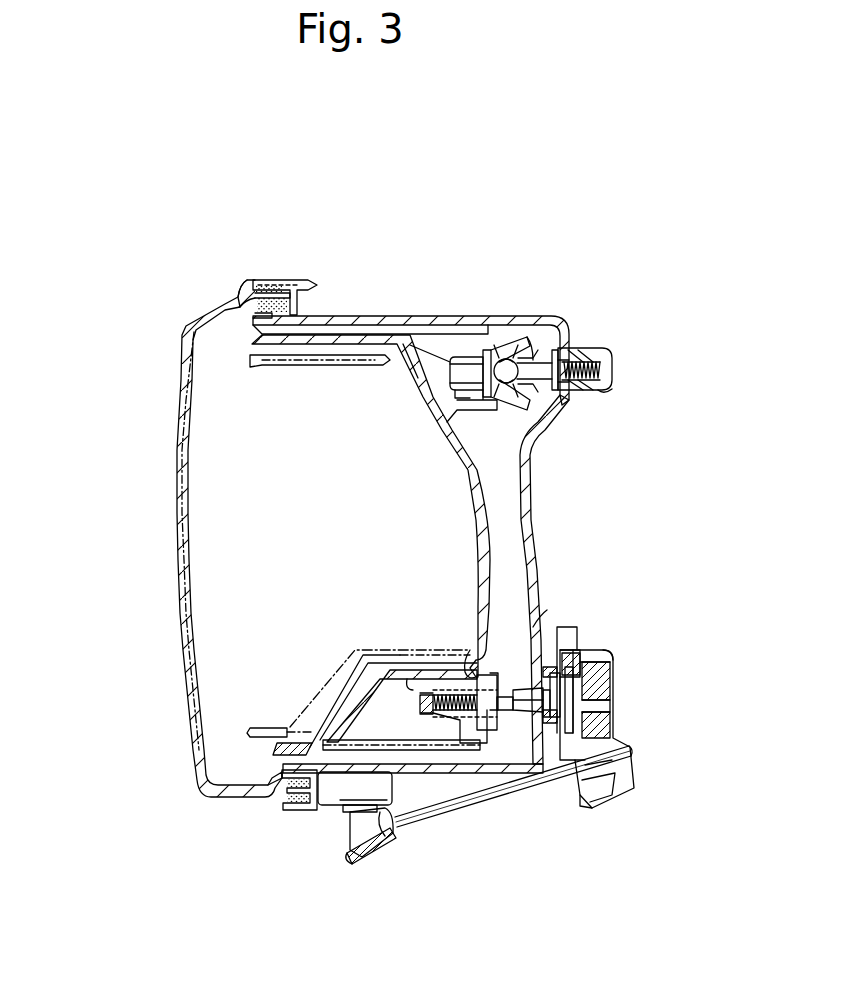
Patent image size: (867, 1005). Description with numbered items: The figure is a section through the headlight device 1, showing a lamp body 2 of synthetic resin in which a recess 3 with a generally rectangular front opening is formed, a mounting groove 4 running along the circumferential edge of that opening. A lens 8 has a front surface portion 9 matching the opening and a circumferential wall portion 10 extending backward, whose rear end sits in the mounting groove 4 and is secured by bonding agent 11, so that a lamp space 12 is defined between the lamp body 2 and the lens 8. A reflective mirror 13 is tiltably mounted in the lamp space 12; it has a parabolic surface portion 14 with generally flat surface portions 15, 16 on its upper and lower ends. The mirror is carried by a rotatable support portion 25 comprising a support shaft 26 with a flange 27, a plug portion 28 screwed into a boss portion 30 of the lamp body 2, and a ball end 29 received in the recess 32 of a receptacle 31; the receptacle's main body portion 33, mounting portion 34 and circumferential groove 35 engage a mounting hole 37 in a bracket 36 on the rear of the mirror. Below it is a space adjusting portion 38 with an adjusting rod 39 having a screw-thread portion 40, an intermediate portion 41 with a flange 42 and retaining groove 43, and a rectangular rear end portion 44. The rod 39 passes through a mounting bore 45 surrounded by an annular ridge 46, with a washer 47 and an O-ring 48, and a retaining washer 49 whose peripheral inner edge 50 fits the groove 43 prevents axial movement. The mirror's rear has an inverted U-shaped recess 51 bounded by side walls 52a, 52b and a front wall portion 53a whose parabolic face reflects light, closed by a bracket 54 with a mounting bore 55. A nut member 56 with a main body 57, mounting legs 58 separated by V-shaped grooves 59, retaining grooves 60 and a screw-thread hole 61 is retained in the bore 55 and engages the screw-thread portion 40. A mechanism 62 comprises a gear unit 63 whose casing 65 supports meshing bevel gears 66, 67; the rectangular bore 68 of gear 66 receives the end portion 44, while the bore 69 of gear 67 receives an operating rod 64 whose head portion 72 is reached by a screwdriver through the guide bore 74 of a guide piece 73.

The vehicle headlamp 1 is at (120, 200).
The lamp body 2 is at (337, 300).
The recess 3 is at (523, 490).
The mounting groove 4 is at (277, 292).
The lens 8 is at (177, 512).
The front surface portion 9 is at (177, 446).
The circumferential wall portion 10 is at (218, 303).
The bonding agent 11 is at (235, 300).
The lamp space 12 is at (283, 530).
The reflective mirror 13 is at (410, 381).
The parabolic surface portion 14 is at (420, 388).
The flat surface portion 15 is at (260, 366).
The flat surface portion 16 is at (250, 733).
The rotatable support portion 25 is at (553, 340).
The support shaft 26 is at (547, 338).
The flange 27 is at (572, 342).
The plug portion 28 is at (592, 345).
The ball end 29 is at (497, 345).
The boss portion 30 is at (612, 389).
The receptacle 31 is at (405, 437).
The recess 32 is at (518, 345).
The main body portion 33 is at (500, 432).
The mounting portion 34 is at (460, 393).
The circumferential groove 35 is at (480, 345).
The bracket 36 is at (425, 335).
The mounting hole 37 is at (458, 340).
The space adjusting portion 38 is at (543, 547).
The adjusting rod 39 is at (570, 652).
The screw-thread portion 40 is at (490, 665).
The intermediate portion 41 is at (548, 645).
The flange 42 is at (593, 800).
The retaining groove 43 is at (550, 720).
The rear end portion 44 is at (603, 695).
The mounting bore 45 is at (600, 656).
The annular ridge 46 is at (580, 765).
The washer 47 is at (613, 656).
The O-ring 48 is at (562, 740).
The retaining washer 49 is at (590, 652).
The peripheral inner edge 50 is at (540, 722).
The recess 51 is at (340, 737).
The side wall 52a is at (365, 660).
The side wall 52b is at (408, 672).
The front wall portion 53a is at (312, 740).
The bracket 54 is at (433, 690).
The mounting bore 55 is at (410, 668).
The nut member 56 is at (495, 718).
The main body 57 is at (509, 790).
The mounting legs 58 is at (453, 745).
The V-shaped grooves 59 is at (430, 764).
The retaining grooves 60 is at (460, 683).
The screw-thread hole 61 is at (467, 676).
The mechanism 62 is at (653, 781).
The gear unit 63 is at (618, 723).
The operating rod 64 is at (440, 745).
The casing 65 is at (622, 735).
The bevel gear 66 is at (615, 683).
The bevel gear 67 is at (625, 800).
The rectangular bore 68 is at (607, 712).
The bore 69 is at (634, 752).
The head portion 72 is at (402, 835).
The guide piece 73 is at (376, 858).
The guide bore 74 is at (351, 864).